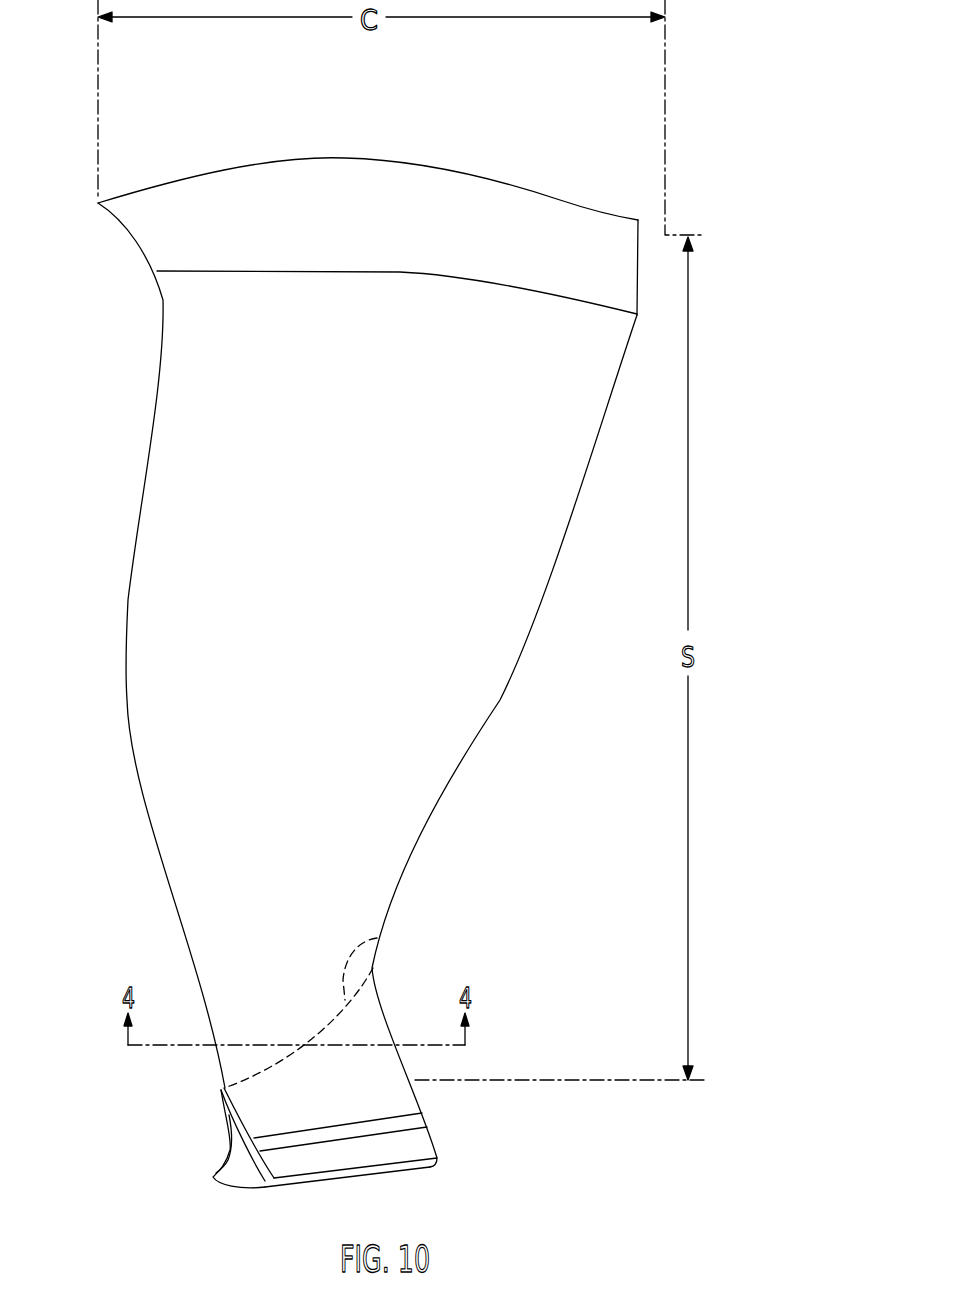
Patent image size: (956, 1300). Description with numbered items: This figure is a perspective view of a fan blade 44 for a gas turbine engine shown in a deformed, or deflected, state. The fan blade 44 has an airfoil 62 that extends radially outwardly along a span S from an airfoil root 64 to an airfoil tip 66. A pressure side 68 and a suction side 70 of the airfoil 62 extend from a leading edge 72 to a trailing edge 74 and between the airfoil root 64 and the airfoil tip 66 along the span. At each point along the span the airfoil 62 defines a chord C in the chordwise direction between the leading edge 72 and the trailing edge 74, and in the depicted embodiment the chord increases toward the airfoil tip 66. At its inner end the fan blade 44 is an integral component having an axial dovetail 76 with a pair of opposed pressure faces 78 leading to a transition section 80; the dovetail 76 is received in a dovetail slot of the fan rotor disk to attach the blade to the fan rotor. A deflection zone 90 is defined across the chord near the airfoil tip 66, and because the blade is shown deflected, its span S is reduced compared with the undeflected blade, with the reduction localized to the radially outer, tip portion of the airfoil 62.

The fan blade 44 is at (505, 163).
The airfoil 62 is at (182, 823).
The airfoil root 64 is at (378, 938).
The airfoil tip 66 is at (344, 158).
The pressure side 68 is at (186, 620).
The suction side 70 is at (361, 554).
The leading edge 72 is at (542, 608).
The trailing edge 74 is at (127, 700).
The axial dovetail 76 is at (245, 1176).
The pressure faces 78 is at (231, 1148).
The transition section 80 is at (347, 1078).
The deflection zone 90 is at (218, 271).